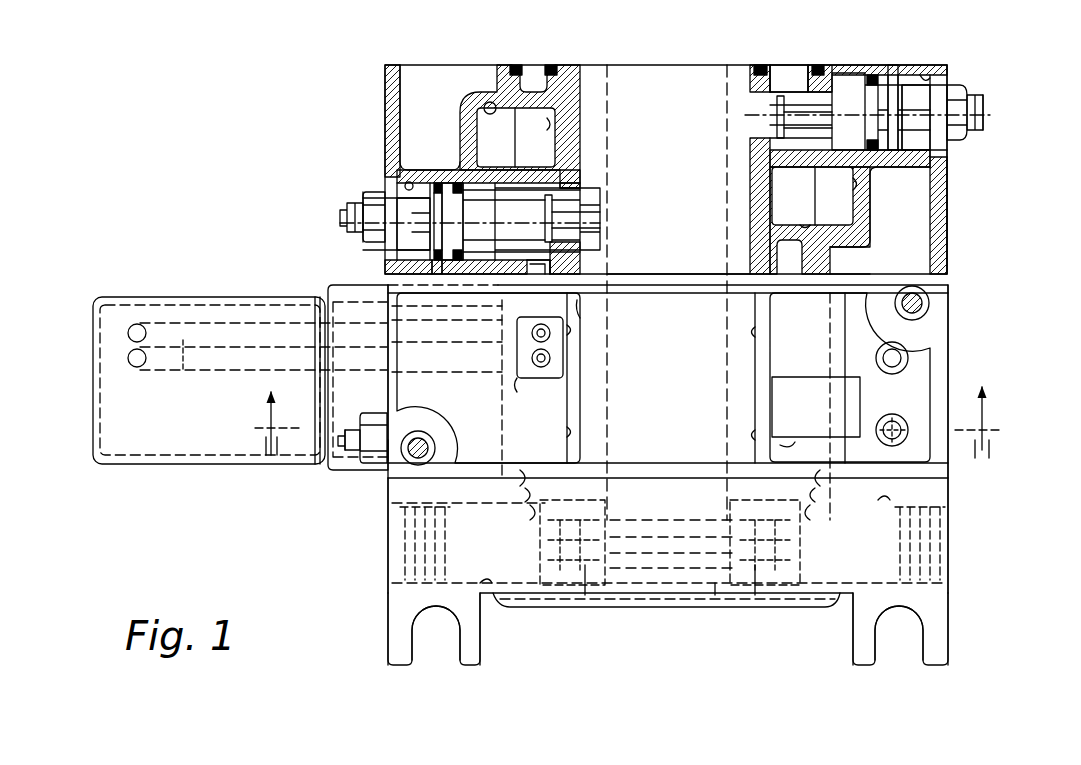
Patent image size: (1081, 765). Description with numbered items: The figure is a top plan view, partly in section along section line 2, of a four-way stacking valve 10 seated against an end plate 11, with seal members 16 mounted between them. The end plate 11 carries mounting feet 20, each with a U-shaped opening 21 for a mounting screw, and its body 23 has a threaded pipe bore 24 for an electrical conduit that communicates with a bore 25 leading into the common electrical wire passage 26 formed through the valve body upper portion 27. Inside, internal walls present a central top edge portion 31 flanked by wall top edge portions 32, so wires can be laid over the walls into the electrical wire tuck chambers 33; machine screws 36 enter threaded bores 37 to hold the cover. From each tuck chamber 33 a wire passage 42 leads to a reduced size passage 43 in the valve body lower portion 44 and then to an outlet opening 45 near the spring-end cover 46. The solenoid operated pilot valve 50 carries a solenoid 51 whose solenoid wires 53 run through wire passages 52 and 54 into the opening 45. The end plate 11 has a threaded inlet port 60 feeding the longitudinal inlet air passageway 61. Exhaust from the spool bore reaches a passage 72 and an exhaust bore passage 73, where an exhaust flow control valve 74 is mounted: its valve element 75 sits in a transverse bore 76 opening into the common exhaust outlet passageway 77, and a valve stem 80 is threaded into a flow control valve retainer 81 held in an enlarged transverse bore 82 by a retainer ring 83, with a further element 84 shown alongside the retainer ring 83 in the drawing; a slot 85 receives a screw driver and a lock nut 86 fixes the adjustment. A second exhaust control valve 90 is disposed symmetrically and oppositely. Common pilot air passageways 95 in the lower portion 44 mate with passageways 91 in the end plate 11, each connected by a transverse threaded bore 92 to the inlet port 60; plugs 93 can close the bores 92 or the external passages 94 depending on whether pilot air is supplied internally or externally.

The section line 2 is at (625, 422).
The four-way valve 10 is at (952, 205).
The end plate 11 is at (952, 542).
The seal members 16 is at (567, 65).
The mounting feet 20 is at (392, 655).
The U-shaped opening 21 is at (448, 625).
The end plate body 23 is at (370, 526).
The threaded pipe bore 24 is at (550, 595).
The electrical wire passage 25 is at (705, 542).
The common electrical wire passage 26 is at (692, 365).
The valve body upper portion 27 is at (948, 185).
The central top edge portion 31 is at (575, 375).
The wall top edge portions 32 is at (575, 330).
The electrical wire tuck chambers 33 is at (545, 441).
The machine screws 36 is at (402, 464).
The threaded bores 37 is at (420, 462).
The wire passage 42 is at (490, 105).
The reduced size passage 43 is at (552, 123).
The valve body lower portion 44 is at (505, 430).
The wire outlet opening 45 is at (520, 380).
The cover 46 is at (855, 272).
The solenoid operated pilot valve 50 is at (346, 286).
The solenoid 51 is at (186, 296).
The wire passage 52 is at (436, 385).
The solenoid wires 53 is at (185, 355).
The wire passage 54 is at (248, 303).
The threaded inlet port 60 is at (718, 590).
The inlet air passageway 61 is at (610, 72).
The passage 72 is at (545, 264).
The exhaust bore passage 73 is at (572, 196).
The exhaust flow control valve 74 is at (362, 196).
The valve element 75 is at (570, 219).
The transverse bore 76 is at (556, 208).
The common exhaust outlet passageway 77 is at (680, 175).
The valve stem 80 is at (515, 215).
The flow control valve retainer 81 is at (420, 198).
The transverse bore 82 is at (408, 182).
The retainer ring 83 is at (438, 183).
The seal 84 is at (458, 183).
The slot 85 is at (340, 216).
The lock nut 86 is at (375, 190).
The second exhaust control valve 90 is at (990, 98).
The longitudinal passageway 91 is at (530, 513).
The transverse threaded bore 92 is at (588, 590).
The plug 93 is at (400, 550).
The passage 94 is at (487, 590).
The common pilot air passageways 95 is at (522, 493).